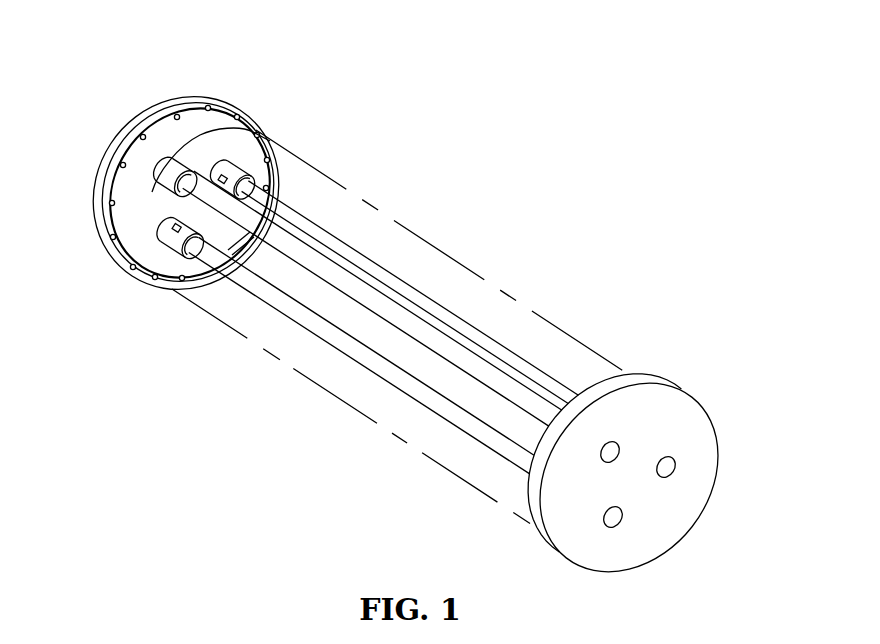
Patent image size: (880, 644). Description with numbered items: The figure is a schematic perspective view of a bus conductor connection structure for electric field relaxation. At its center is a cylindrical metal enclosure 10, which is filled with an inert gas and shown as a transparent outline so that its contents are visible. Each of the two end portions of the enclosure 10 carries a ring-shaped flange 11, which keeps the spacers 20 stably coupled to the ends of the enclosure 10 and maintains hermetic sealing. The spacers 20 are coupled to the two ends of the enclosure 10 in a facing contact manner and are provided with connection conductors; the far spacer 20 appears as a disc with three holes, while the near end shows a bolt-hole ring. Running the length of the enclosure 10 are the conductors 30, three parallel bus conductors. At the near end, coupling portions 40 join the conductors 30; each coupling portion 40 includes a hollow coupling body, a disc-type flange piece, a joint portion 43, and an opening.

The enclosure 10 is at (457, 262).
The flange 11 is at (272, 176).
The spacer 20 is at (120, 188).
The conductor 30 is at (327, 268).
The coupling portion 40 is at (199, 132).
The joint portion 43 is at (270, 140).